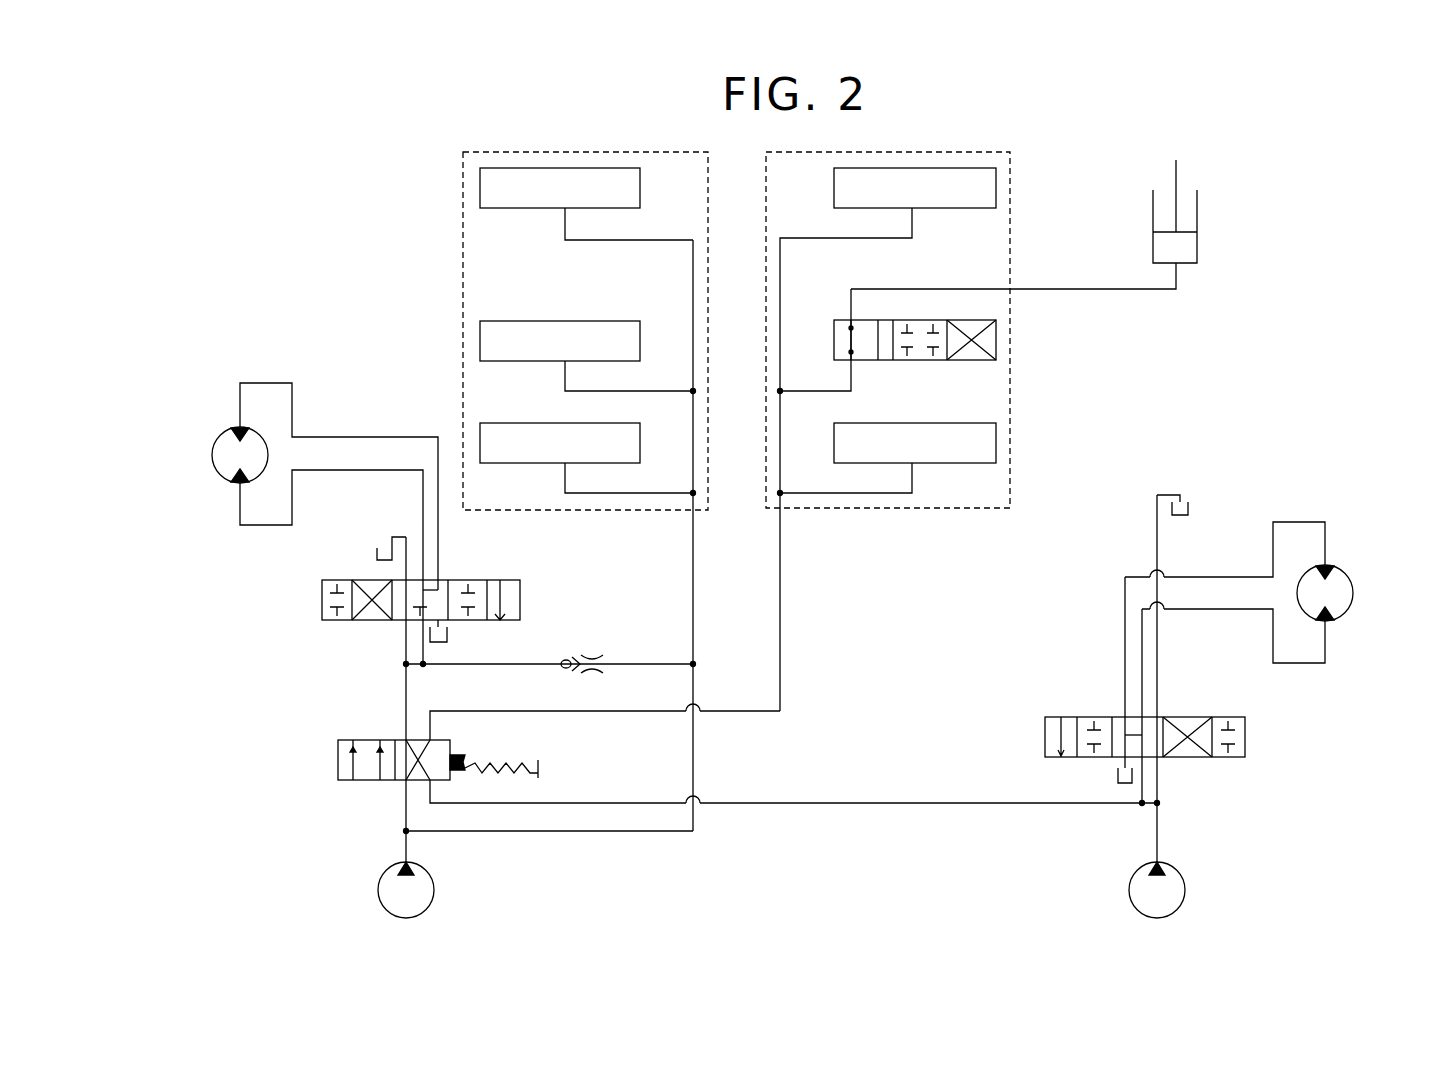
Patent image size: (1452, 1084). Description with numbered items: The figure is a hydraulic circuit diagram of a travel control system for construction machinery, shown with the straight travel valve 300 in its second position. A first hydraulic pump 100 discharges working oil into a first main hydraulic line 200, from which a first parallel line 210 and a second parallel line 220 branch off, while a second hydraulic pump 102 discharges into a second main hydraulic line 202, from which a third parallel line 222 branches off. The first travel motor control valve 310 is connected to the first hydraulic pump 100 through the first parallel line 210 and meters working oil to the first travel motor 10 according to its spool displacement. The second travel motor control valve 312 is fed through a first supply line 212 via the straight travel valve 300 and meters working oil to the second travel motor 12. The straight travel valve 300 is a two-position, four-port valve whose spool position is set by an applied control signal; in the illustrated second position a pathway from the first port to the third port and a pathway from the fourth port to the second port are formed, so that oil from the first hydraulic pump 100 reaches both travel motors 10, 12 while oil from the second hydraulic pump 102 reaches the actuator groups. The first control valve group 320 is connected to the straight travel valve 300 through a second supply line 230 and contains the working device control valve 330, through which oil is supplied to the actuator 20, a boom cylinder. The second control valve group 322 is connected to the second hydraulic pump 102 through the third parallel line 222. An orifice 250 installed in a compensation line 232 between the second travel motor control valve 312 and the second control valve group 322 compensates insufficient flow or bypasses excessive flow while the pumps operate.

The first travel motor 10 is at (1357, 586).
The second travel motor 12 is at (208, 450).
The actuator 20 is at (1207, 212).
The first hydraulic pump 100 is at (1186, 889).
The second hydraulic pump 102 is at (378, 889).
The first main hydraulic line 200 is at (1160, 832).
The second main hydraulic line 202 is at (402, 848).
The first parallel line 210 is at (1145, 788).
The first supply line 212 is at (402, 688).
The second parallel line 220 is at (936, 806).
The third parallel line 222 is at (641, 834).
The second supply line 230 is at (642, 714).
The compensation line 232 is at (648, 662).
The orifice 250 is at (592, 648).
The straight travel valve 300 is at (338, 752).
The first travel motor control valve 310 is at (1250, 736).
The second travel motor control valve 312 is at (320, 592).
The first control valve group 320 is at (1012, 242).
The second control valve group 322 is at (462, 245).
The working device control valve 330 is at (998, 340).